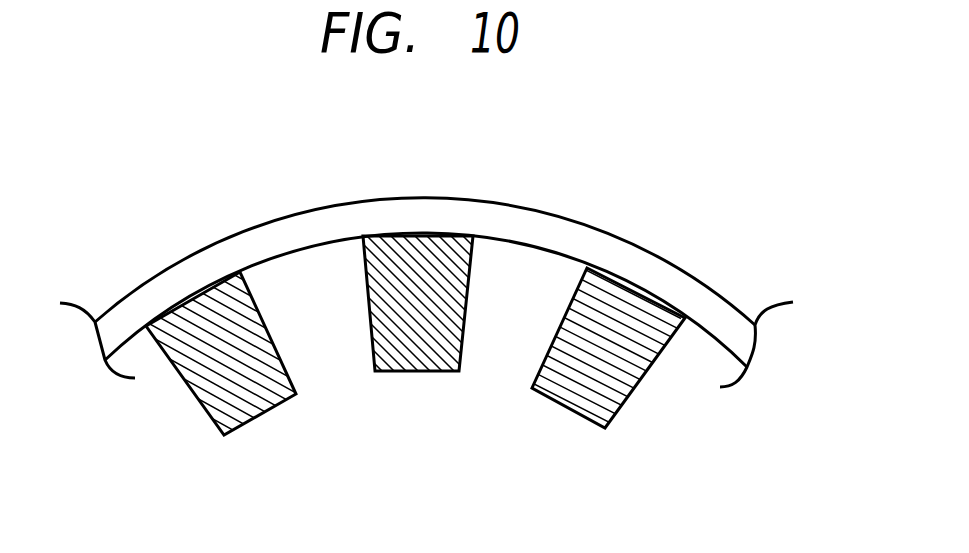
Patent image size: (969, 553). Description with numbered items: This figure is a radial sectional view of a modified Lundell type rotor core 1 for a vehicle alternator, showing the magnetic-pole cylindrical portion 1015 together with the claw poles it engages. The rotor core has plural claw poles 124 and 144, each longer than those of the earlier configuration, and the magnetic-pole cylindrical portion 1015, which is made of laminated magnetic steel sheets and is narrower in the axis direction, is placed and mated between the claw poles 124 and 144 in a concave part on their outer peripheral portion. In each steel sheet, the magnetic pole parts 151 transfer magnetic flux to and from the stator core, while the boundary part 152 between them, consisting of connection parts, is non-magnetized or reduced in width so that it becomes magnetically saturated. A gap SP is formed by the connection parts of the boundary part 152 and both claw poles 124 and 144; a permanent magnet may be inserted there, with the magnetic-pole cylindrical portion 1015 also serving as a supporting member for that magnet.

The motor stator core 1 is at (654, 414).
The magnetic-pole cylindrical portion 1015 is at (547, 186).
The magnetic pole part 151 is at (173, 280).
The boundary part 152 is at (297, 228).
The claw pole 124 is at (248, 405).
The claw pole 144 is at (413, 357).
The gap SP is at (307, 302).